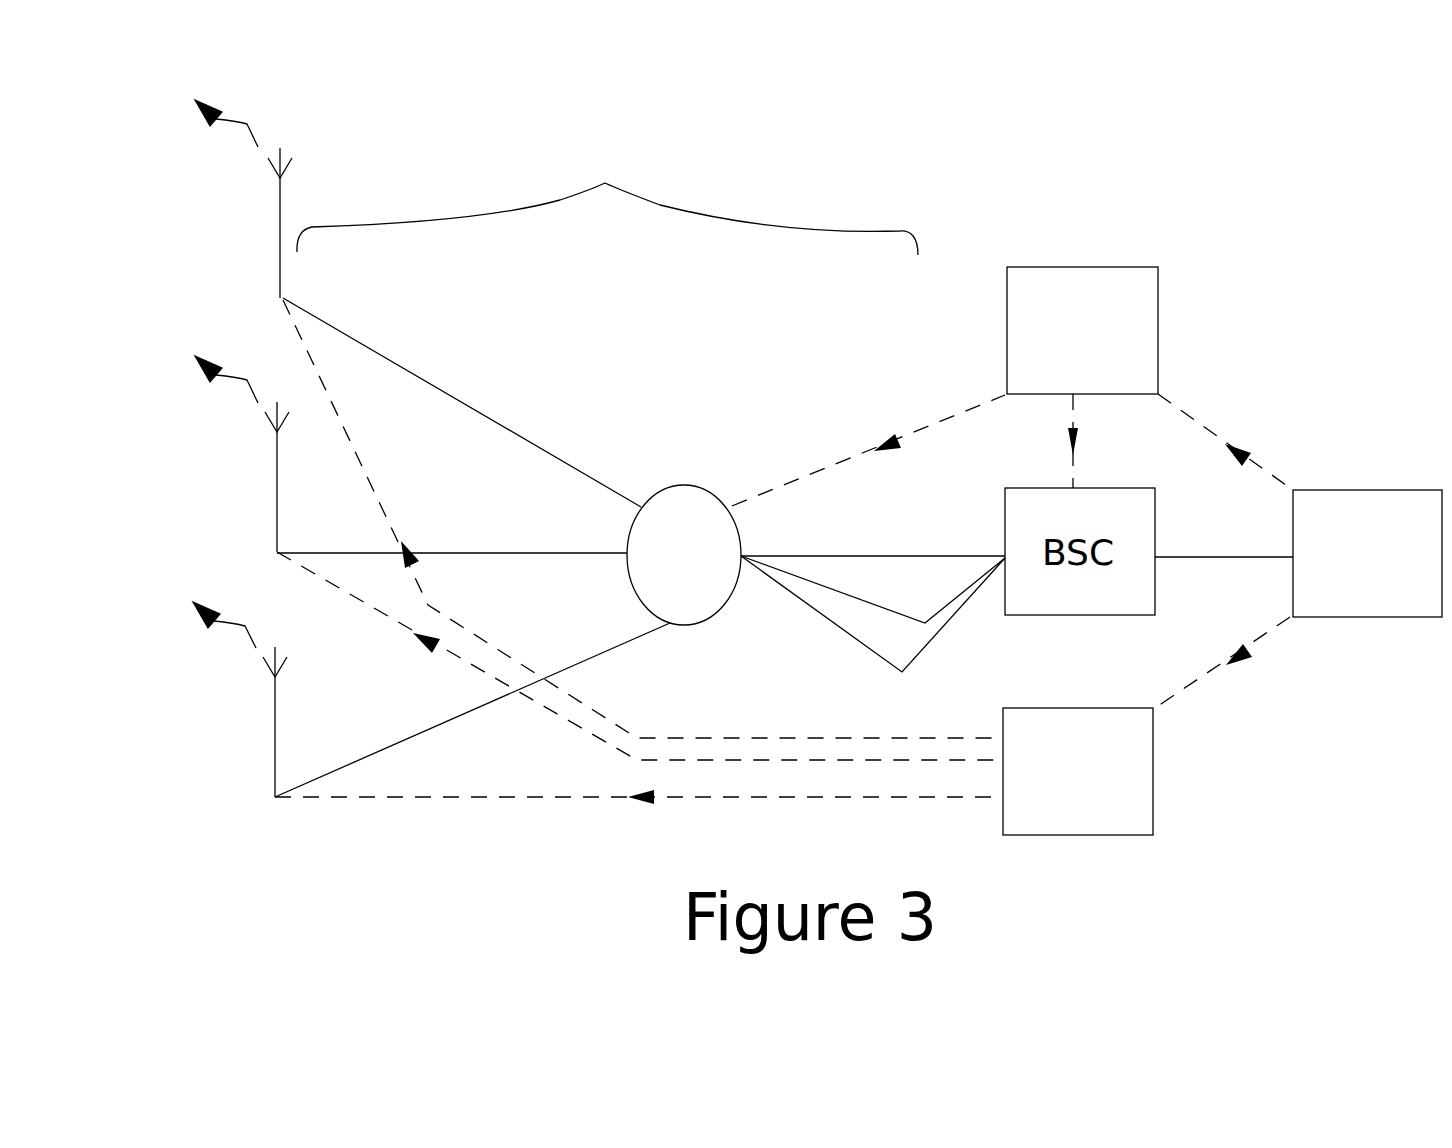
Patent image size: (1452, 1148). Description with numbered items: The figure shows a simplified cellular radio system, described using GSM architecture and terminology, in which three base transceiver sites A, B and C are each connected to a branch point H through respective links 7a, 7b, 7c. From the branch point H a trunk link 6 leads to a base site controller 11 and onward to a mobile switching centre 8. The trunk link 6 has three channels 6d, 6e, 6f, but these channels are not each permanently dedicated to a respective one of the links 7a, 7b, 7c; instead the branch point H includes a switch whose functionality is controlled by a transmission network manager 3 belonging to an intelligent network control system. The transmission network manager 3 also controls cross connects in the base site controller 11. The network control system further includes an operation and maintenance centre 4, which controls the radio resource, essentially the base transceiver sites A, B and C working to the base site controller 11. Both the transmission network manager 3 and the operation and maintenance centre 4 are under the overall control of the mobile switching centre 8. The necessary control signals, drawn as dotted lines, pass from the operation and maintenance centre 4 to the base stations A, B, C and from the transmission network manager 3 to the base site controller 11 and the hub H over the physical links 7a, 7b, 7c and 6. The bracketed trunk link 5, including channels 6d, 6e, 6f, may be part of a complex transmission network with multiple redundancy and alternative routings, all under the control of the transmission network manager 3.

The transmission network manager 3 is at (1090, 267).
The operation and maintenance centre 4 is at (1085, 835).
The trunk link 5 is at (607, 198).
The trunk link 6 is at (833, 613).
The channel 6d is at (897, 556).
The channel 6e is at (950, 602).
The channel 6f is at (867, 648).
The link 7a is at (484, 416).
The link 7b is at (485, 552).
The link 7c is at (445, 728).
The mobile switching centre 8 is at (1365, 617).
The base site controller 11 is at (1157, 545).
The base transceiver site A is at (280, 242).
The base transceiver site B is at (277, 497).
The base transceiver site C is at (275, 739).
The branch point H is at (690, 485).